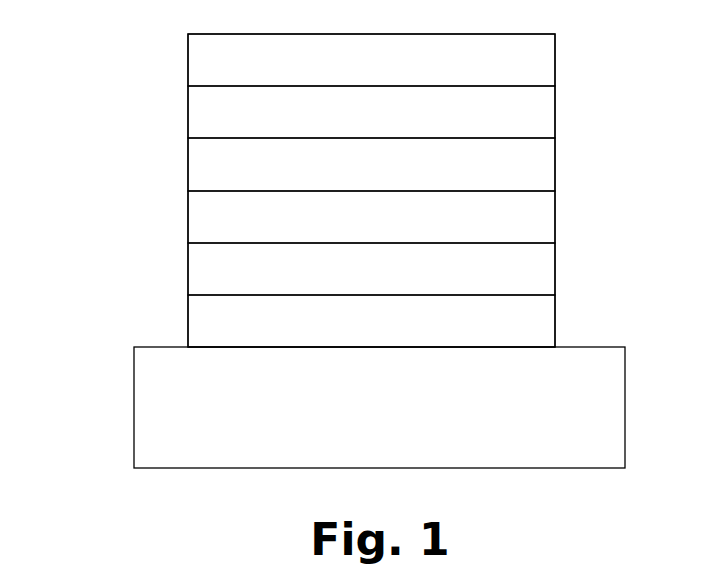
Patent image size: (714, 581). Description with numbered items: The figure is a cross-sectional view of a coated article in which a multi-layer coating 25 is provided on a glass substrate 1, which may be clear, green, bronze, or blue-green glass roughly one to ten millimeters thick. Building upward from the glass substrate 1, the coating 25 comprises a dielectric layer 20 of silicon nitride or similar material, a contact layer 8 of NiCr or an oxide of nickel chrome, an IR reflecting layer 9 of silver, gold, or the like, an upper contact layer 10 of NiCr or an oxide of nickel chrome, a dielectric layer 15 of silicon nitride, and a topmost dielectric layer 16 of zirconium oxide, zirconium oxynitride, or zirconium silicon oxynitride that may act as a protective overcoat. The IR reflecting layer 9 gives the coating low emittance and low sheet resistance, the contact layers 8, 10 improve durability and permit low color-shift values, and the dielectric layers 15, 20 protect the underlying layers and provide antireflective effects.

The dielectric layer 16 is at (555, 60).
The dielectric layer 15 is at (555, 112).
The upper contact layer 10 is at (555, 165).
The IR reflecting layer 9 is at (555, 217).
The contact layer 8 is at (555, 270).
The dielectric layer 20 is at (555, 322).
The glass substrate 1 is at (625, 408).
The coating 25 is at (82, 33).